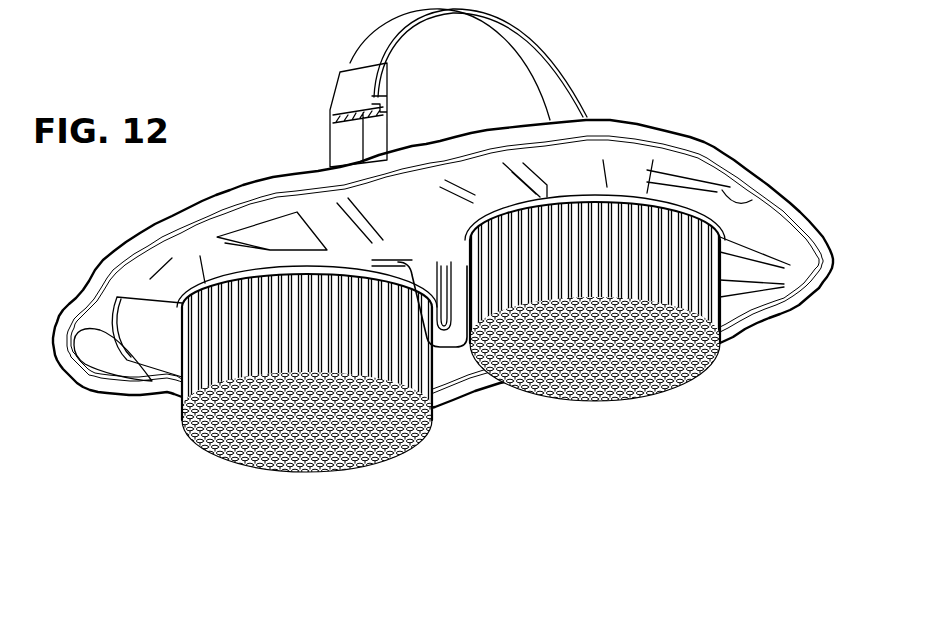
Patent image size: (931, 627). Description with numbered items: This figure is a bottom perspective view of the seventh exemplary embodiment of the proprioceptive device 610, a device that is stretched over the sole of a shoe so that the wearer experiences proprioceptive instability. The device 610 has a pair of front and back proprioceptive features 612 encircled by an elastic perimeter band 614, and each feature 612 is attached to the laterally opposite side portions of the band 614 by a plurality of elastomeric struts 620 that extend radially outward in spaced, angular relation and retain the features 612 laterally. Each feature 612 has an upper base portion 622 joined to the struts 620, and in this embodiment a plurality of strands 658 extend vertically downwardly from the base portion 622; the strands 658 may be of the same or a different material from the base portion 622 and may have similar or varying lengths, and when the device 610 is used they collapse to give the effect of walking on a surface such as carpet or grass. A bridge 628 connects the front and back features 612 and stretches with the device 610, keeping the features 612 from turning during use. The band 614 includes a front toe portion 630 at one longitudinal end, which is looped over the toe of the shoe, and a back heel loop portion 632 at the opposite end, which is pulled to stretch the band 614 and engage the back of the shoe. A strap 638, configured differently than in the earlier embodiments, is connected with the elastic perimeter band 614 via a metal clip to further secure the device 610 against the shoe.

The proprioceptive device 610 is at (277, 167).
The proprioceptive feature 612 is at (220, 284).
The elastic perimeter band 614 is at (338, 158).
The struts 620 is at (453, 176).
The base portion 622 is at (670, 197).
The bridge 628 is at (443, 342).
The front toe portion 630 is at (728, 196).
The back heel loop portion 632 is at (117, 362).
The strap 638 is at (533, 33).
The strands 658 is at (294, 468).